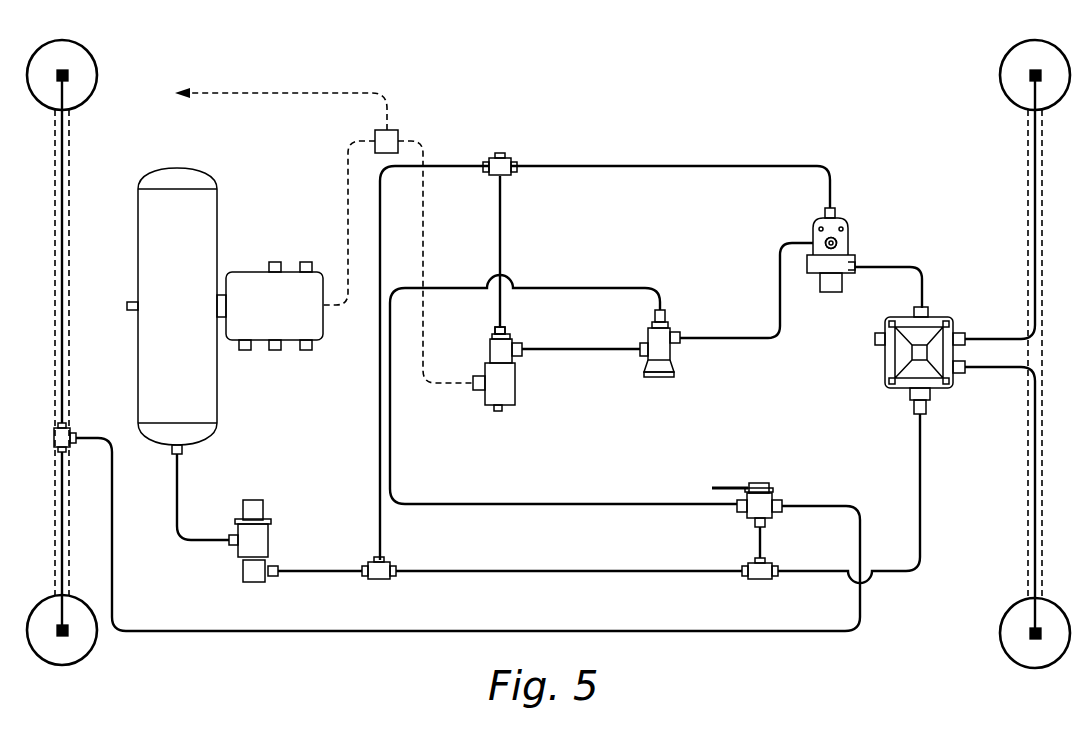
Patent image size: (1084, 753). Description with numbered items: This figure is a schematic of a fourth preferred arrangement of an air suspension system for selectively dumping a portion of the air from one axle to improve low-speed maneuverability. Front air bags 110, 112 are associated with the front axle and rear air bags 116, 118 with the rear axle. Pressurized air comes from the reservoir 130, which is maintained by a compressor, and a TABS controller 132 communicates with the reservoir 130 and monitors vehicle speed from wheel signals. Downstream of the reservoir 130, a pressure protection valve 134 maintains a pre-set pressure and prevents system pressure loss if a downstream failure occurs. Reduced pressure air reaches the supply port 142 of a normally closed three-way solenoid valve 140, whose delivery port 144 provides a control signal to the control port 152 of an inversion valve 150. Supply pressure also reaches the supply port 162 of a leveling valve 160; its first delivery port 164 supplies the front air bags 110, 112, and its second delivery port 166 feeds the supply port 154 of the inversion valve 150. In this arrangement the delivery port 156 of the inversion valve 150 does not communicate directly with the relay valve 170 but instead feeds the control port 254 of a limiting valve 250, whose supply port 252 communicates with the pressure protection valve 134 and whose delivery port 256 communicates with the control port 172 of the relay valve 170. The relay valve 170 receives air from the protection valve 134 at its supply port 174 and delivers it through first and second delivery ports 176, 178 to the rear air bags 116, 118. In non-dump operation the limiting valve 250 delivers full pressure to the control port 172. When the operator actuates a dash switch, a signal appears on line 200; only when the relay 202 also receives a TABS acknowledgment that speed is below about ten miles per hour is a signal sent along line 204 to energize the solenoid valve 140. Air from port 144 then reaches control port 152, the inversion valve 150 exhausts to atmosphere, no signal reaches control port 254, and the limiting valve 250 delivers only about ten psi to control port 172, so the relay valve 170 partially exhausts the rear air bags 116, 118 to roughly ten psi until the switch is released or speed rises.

The front air bag 110 is at (92, 73).
The front air bag 112 is at (89, 640).
The rear air bag 116 is at (1011, 69).
The rear air bag 118 is at (1005, 641).
The reservoir 130 is at (208, 311).
The TABS controller 132 is at (274, 335).
The pressure protection valve 134 is at (287, 523).
The solenoid valve 140 is at (540, 369).
The supply port 142 is at (527, 316).
The delivery port 144 is at (540, 368).
The inversion valve 150 is at (672, 331).
The control port 152 is at (618, 366).
The supply port 154 is at (685, 297).
The delivery port 156 is at (702, 352).
The leveling valve 160 is at (750, 504).
The supply port 162 is at (794, 536).
The first delivery port 164 is at (806, 487).
The second delivery port 166 is at (712, 526).
The relay valve 170 is at (902, 358).
The control port 172 is at (949, 293).
The supply port 174 is at (949, 423).
The first delivery port 176 is at (981, 320).
The second delivery port 178 is at (984, 383).
The line 200 is at (281, 92).
The relay 202 is at (419, 120).
The line 204 is at (400, 262).
The limiting valve 250 is at (838, 211).
The supply port 252 is at (806, 198).
The control port 254 is at (797, 232).
The delivery port 256 is at (879, 249).